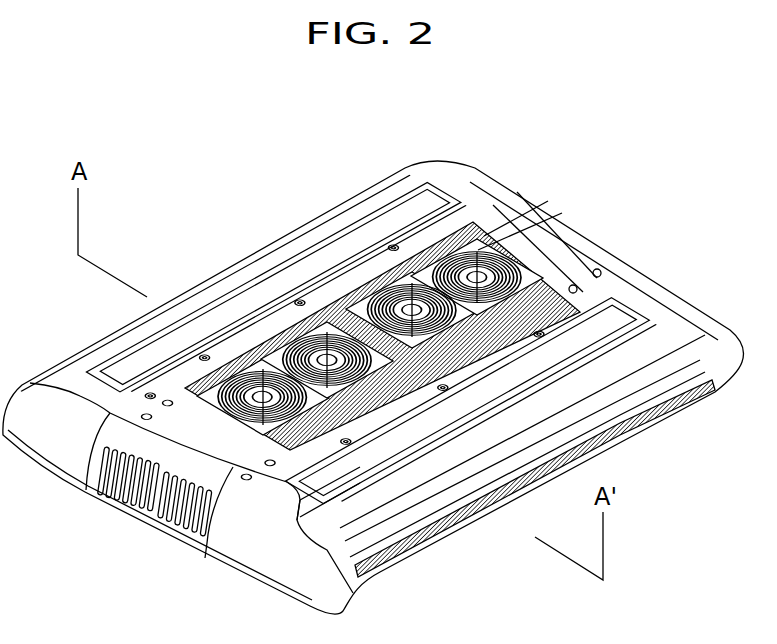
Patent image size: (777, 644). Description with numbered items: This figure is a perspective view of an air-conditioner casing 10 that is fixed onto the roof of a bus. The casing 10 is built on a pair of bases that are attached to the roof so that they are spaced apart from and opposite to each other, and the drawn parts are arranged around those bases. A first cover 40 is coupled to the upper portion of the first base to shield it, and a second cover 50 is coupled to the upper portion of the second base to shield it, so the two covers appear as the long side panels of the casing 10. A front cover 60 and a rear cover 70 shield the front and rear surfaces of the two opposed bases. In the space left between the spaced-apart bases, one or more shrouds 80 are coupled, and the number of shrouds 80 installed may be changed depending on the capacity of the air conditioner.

The air-conditioner casing 10 is at (462, 210).
The first cover 40 is at (336, 230).
The second cover 50 is at (628, 370).
The front cover 60 is at (200, 438).
The rear cover 70 is at (540, 248).
The shroud 80 is at (387, 400).